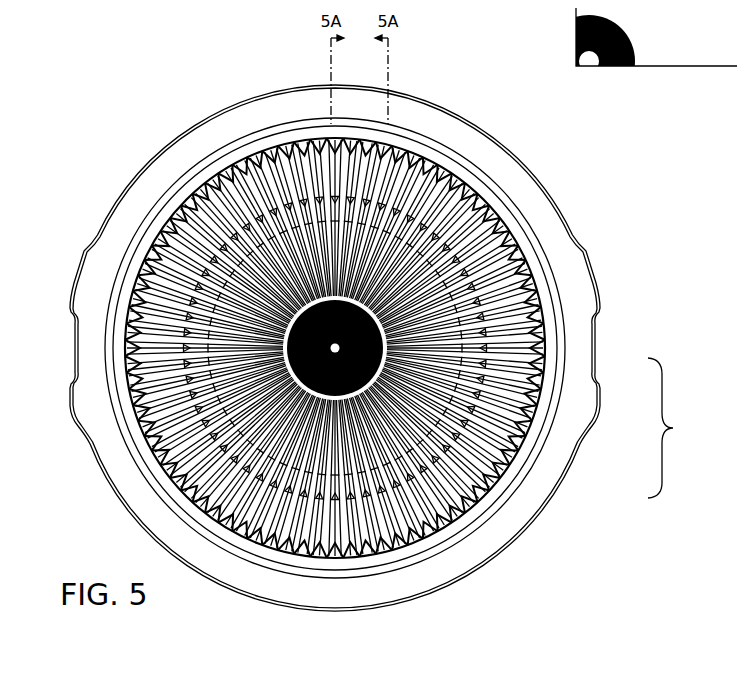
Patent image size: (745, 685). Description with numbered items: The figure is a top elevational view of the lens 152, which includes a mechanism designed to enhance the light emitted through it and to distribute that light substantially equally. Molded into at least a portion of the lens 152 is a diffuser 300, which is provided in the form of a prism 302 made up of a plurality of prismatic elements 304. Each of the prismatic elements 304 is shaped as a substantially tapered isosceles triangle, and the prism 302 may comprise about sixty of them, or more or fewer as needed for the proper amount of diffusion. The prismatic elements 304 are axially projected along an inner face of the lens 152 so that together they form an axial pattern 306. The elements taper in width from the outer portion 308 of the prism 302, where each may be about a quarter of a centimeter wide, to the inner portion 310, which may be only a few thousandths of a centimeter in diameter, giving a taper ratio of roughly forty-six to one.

The lens 152 is at (522, 247).
The diffuser 300 is at (490, 455).
The prism 302 is at (412, 522).
The prismatic elements 304 is at (383, 152).
The axial pattern 306 is at (681, 428).
The outer portion 308 is at (347, 152).
The inner portion 310 is at (198, 214).